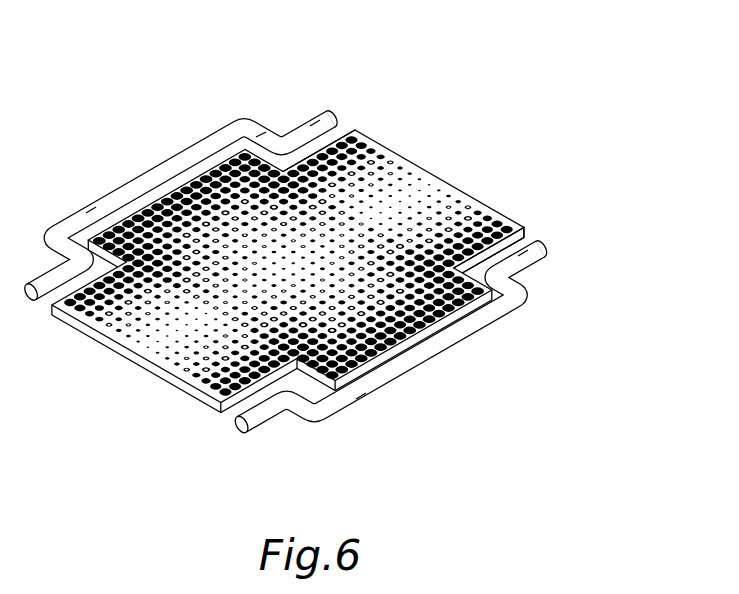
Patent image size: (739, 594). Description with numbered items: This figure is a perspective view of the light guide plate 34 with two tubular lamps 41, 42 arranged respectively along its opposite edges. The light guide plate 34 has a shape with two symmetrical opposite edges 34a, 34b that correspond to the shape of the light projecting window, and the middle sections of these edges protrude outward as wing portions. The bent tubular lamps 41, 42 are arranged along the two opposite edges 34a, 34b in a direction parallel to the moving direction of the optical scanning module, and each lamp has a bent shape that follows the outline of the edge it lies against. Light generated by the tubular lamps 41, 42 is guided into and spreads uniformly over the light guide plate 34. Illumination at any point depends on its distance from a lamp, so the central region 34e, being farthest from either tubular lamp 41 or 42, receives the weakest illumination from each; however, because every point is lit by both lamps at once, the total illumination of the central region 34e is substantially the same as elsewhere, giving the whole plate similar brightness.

The light guide plate 34 is at (450, 153).
The opposite edge 34a is at (345, 128).
The opposite edge 34b is at (528, 232).
The central region 34e is at (258, 288).
The tubular lamp 41 is at (163, 181).
The tubular lamp 42 is at (455, 333).